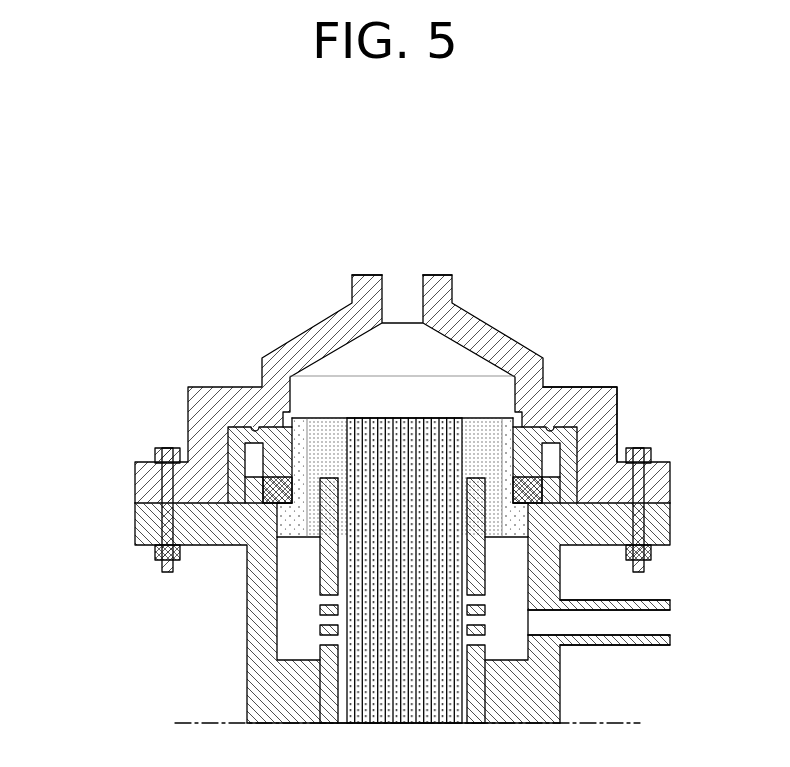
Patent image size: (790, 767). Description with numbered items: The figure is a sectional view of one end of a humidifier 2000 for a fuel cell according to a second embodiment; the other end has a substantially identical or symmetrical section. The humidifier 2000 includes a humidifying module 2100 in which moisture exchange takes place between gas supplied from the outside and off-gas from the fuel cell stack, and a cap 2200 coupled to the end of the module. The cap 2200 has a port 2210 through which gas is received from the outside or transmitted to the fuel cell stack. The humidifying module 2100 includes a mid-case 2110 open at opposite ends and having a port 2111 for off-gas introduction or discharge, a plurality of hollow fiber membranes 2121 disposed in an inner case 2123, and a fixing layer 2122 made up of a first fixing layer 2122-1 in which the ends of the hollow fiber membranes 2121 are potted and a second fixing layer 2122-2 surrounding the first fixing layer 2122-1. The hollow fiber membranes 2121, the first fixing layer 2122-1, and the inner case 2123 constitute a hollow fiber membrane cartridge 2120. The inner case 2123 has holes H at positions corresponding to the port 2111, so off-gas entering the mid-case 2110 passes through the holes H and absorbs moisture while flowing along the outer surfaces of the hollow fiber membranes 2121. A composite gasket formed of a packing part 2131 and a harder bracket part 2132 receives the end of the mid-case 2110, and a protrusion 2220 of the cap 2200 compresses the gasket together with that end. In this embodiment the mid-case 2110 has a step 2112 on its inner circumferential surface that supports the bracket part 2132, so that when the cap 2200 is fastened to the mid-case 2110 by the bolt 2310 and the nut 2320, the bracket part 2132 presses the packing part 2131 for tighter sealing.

The humidifier 2000 is at (381, 173).
The humidifying module 2100 is at (213, 640).
The mid-case 2110 is at (292, 697).
The port 2111 is at (623, 642).
The step 2112 is at (275, 490).
The hollow fiber membrane cartridge 2120 is at (350, 229).
The hollow fiber membranes 2121 is at (352, 425).
The fixing layer 2122 is at (84, 392).
The first fixing layer 2122-1 is at (338, 435).
The second fixing layer 2122-2 is at (303, 462).
The inner case 2123 is at (330, 485).
The packing part 2131 is at (527, 425).
The bracket part 2132 is at (578, 453).
The cap 2200 is at (527, 325).
The port 2210 is at (440, 288).
The protrusion 2220 is at (598, 428).
The bolt 2310 is at (651, 455).
The nut 2320 is at (651, 553).
The holes H is at (318, 598).